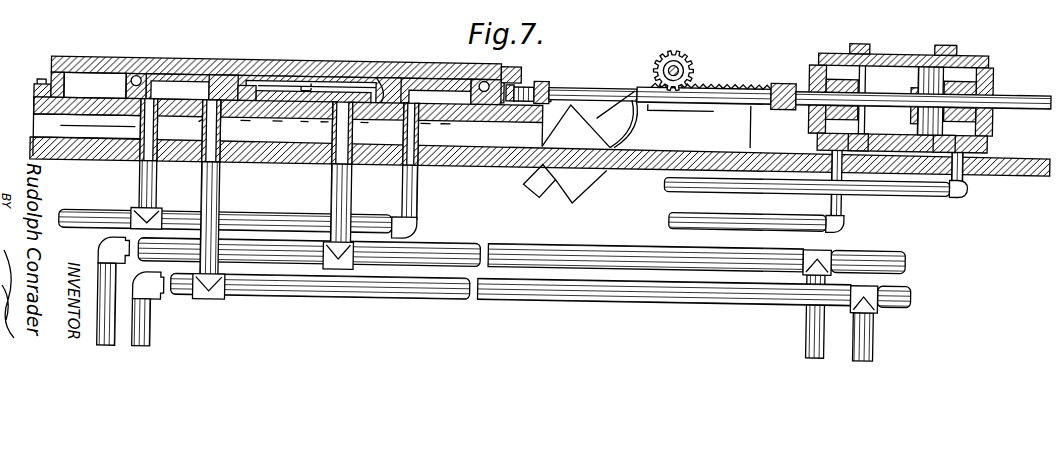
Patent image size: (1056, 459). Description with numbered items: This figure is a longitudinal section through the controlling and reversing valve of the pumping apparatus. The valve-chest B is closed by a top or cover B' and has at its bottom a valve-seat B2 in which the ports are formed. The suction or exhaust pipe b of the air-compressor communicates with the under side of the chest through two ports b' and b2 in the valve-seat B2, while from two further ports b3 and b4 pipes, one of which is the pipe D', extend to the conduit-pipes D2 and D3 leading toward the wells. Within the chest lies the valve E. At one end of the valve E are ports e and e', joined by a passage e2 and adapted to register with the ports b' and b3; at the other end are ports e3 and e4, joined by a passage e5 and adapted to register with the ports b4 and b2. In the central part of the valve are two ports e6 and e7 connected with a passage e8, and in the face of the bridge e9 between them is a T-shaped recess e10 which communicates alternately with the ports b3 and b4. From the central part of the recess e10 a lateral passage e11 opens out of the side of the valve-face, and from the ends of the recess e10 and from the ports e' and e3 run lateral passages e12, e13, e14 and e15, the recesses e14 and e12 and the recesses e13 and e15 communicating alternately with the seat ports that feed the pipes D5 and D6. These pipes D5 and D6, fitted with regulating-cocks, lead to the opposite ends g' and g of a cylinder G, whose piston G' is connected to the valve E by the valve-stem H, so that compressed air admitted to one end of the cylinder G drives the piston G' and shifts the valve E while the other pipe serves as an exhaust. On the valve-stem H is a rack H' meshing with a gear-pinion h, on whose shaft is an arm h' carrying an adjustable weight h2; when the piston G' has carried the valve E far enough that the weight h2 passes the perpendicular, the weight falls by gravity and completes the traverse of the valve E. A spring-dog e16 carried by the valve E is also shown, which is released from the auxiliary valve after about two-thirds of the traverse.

The valve-chest B is at (272, 178).
The top of valve-chest B' is at (276, 52).
The valve-seat B2 is at (33, 113).
The suction or exhaust pipe b is at (239, 167).
The port b' is at (97, 125).
The port b2 is at (420, 114).
The port b3 is at (204, 117).
The port b4 is at (333, 114).
The port e is at (141, 67).
The port e' is at (222, 69).
The passage e2 is at (182, 79).
The port e3 is at (411, 83).
The port e4 is at (482, 75).
The passage e5 is at (448, 84).
The port e6 is at (250, 70).
The port e7 is at (377, 82).
The passage e8 is at (310, 75).
The bridge e9 is at (326, 78).
The T-shaped recess e10 is at (288, 114).
The lateral passage e11 is at (312, 114).
The lateral passage e12 is at (253, 116).
The lateral passage e13 is at (360, 116).
The lateral passage e14 is at (163, 126).
The lateral passage e15 is at (438, 116).
The spring-dog e16 is at (137, 75).
The valve E is at (280, 72).
The valve-stem H is at (586, 79).
The rack H' is at (716, 98).
The gear-pinion h is at (686, 71).
The arm h' is at (617, 97).
The adjustable weight h2 is at (567, 153).
The cylinder G is at (901, 86).
The piston G' is at (909, 100).
The end of cylinder g is at (976, 167).
The end of cylinder g' is at (808, 179).
The pipe D' is at (322, 185).
The conduit-pipe D2 is at (437, 301).
The conduit-pipe D3 is at (442, 241).
The pipe D5 is at (772, 214).
The pipe D6 is at (772, 180).